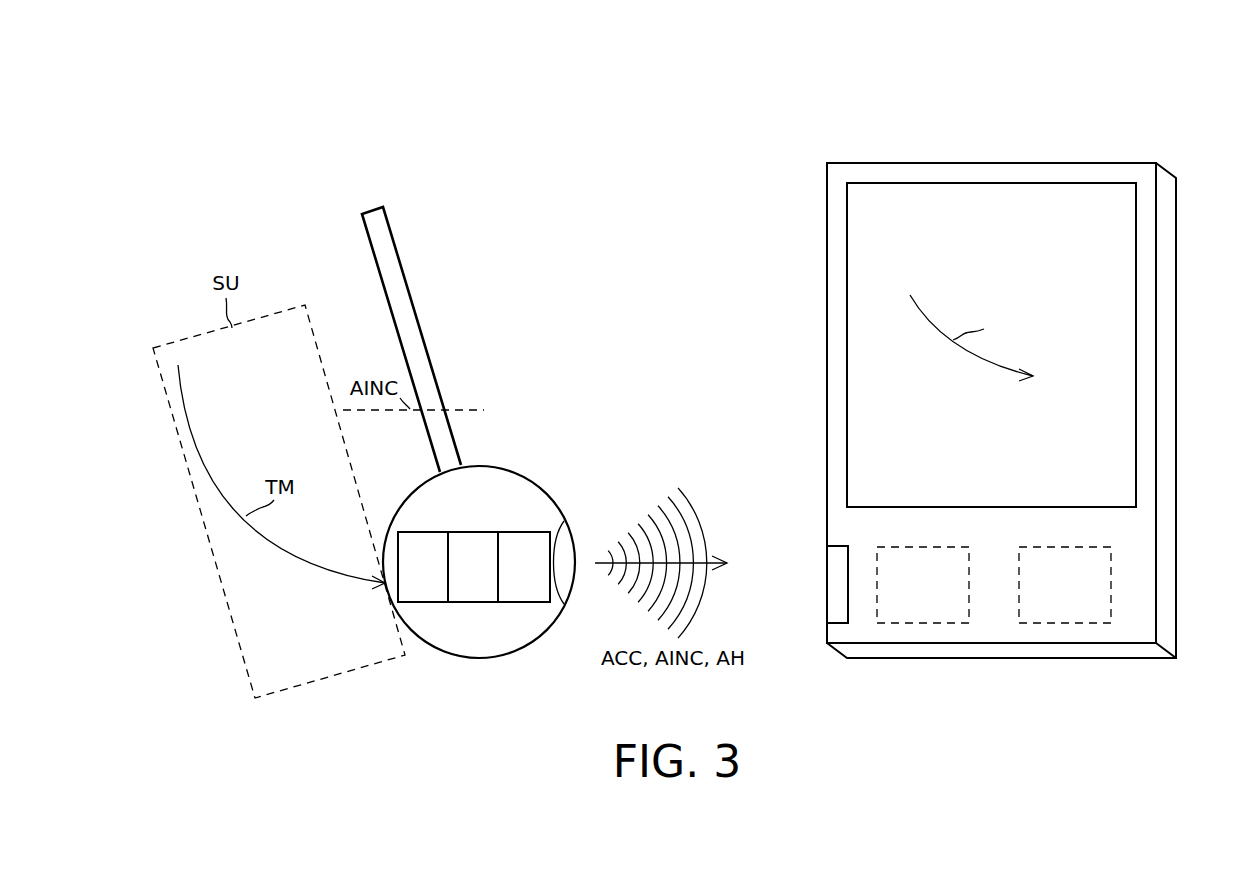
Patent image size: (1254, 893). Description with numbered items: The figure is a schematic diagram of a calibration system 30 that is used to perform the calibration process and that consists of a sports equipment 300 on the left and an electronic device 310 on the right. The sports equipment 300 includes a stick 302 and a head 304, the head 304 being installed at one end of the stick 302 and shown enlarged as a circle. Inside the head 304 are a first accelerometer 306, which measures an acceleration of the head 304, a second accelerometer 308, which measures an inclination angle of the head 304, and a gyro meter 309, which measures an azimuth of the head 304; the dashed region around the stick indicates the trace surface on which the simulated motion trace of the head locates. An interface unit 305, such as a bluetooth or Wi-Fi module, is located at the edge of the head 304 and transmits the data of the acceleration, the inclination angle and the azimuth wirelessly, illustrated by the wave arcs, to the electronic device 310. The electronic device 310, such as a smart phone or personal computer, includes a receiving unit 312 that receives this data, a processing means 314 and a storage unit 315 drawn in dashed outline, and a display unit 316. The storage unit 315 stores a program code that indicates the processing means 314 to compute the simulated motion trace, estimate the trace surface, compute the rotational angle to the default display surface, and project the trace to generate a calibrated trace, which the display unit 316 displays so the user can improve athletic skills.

The calibration system 30 is at (1173, 92).
The sports equipment 300 is at (327, 203).
The stick 302 is at (413, 297).
The head 304 is at (517, 472).
The interface unit 305 is at (568, 537).
The first accelerometer 306 is at (423, 567).
The second accelerometer 308 is at (473, 567).
The gyro meter 309 is at (524, 567).
The electronic device 310 is at (1170, 167).
The receiving unit 312 is at (835, 562).
The processing means 314 is at (923, 585).
The storage unit 315 is at (1065, 585).
The display unit 316 is at (991, 345).